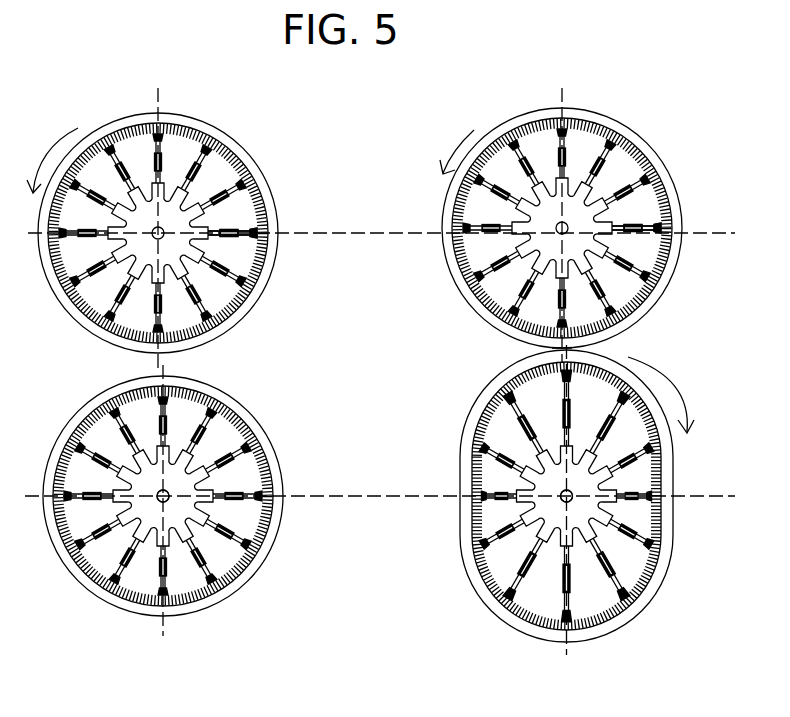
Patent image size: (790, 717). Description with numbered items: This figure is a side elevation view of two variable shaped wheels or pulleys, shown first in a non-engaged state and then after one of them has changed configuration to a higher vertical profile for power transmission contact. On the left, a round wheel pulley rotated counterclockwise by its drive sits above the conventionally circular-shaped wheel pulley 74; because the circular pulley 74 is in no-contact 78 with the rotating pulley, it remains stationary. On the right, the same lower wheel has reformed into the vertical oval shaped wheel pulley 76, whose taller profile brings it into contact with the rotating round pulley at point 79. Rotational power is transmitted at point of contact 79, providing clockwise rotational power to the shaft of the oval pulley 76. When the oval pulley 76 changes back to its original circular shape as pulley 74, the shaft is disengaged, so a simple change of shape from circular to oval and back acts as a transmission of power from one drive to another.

The conventionally circular-shaped wheel pulley 74 is at (258, 418).
The vertical oval shaped wheel pulley 76 is at (457, 418).
The no-contact 78 is at (162, 367).
The point of contact 79 is at (552, 349).